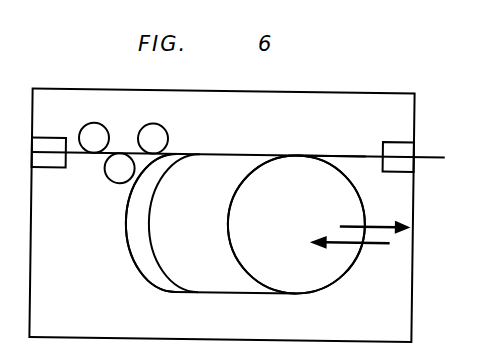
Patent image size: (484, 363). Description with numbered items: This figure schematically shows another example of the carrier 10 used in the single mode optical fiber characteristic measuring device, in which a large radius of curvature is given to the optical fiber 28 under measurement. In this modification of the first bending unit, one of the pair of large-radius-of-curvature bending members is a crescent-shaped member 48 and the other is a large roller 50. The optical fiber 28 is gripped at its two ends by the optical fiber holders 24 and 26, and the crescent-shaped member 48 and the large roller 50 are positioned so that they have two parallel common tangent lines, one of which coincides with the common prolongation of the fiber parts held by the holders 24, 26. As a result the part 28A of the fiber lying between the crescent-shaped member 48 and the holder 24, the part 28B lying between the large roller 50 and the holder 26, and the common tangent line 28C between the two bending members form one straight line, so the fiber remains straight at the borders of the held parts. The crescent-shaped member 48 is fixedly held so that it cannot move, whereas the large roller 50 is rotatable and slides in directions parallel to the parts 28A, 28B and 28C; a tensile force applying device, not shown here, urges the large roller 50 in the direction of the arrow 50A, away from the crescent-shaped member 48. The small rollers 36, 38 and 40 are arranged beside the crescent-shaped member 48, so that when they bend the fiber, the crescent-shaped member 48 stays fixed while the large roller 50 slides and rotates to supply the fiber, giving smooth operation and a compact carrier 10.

The housing 10 is at (414, 93).
The optical fiber holder 24 is at (47, 170).
The optical fiber holder 26 is at (398, 170).
The optical fiber 28 is at (329, 153).
The part of the optical fiber 28A is at (165, 151).
The part of the optical fiber 28B is at (357, 153).
The common tangent line 28C is at (238, 152).
The small roller 36 is at (82, 128).
The small roller 38 is at (141, 128).
The small roller 40 is at (111, 182).
The crescent-shaped member 48 is at (129, 243).
The large roller 50 is at (356, 258).
The direction of disc movement 50A is at (347, 224).